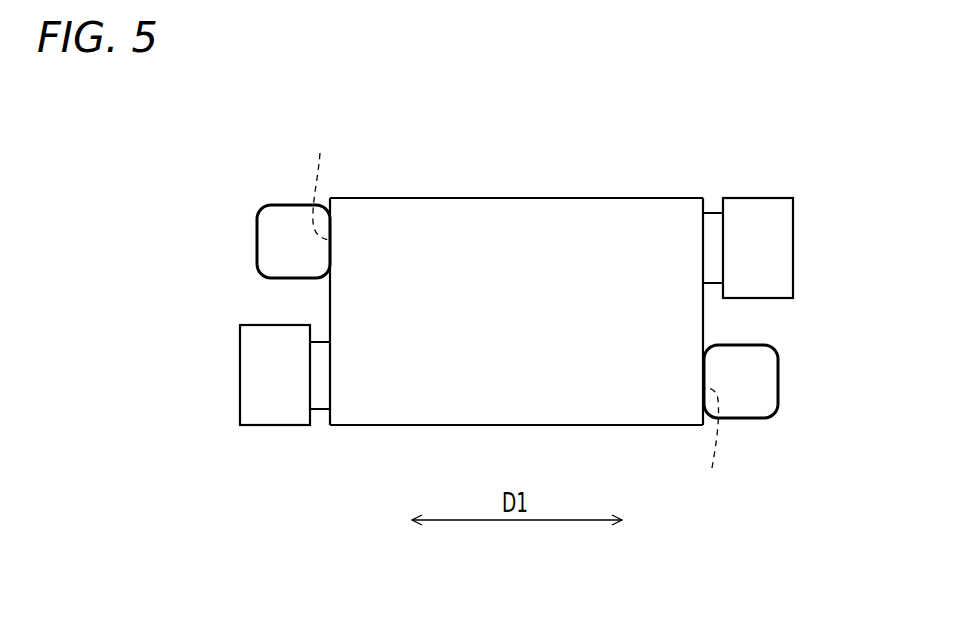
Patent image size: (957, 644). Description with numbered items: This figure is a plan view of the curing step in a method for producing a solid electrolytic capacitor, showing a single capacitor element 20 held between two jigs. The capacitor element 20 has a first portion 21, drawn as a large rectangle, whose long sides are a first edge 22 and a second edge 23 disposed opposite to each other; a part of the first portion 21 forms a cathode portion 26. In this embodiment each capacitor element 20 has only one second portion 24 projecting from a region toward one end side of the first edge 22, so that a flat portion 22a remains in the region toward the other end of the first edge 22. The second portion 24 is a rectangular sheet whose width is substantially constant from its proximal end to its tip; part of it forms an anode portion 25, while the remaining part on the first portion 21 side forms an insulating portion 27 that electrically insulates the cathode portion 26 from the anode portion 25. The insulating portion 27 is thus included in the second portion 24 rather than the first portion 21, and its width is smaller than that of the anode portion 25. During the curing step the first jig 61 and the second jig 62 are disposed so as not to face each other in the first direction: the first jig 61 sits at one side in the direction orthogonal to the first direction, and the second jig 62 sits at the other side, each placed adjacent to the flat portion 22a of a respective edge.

The capacitor element 20 is at (466, 192).
The first portion 21 is at (546, 205).
The cathode portion 26 is at (516, 311).
The first edge 22 is at (705, 327).
The second edge 23 is at (330, 298).
The flat portion 22a is at (516, 313).
The second portion 24 is at (255, 378).
The anode portion 25 is at (273, 397).
The insulating portion 27 is at (318, 393).
The first jig 61 is at (268, 243).
The second jig 62 is at (765, 383).